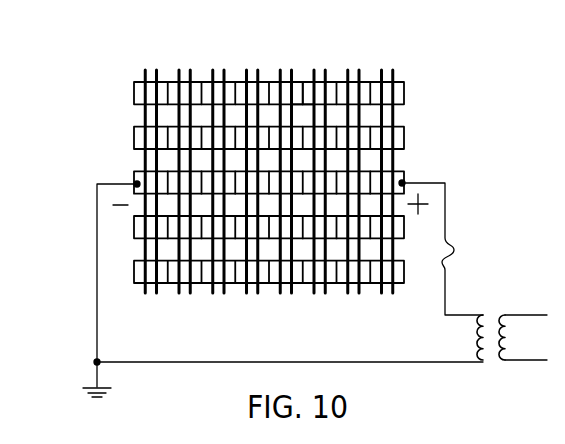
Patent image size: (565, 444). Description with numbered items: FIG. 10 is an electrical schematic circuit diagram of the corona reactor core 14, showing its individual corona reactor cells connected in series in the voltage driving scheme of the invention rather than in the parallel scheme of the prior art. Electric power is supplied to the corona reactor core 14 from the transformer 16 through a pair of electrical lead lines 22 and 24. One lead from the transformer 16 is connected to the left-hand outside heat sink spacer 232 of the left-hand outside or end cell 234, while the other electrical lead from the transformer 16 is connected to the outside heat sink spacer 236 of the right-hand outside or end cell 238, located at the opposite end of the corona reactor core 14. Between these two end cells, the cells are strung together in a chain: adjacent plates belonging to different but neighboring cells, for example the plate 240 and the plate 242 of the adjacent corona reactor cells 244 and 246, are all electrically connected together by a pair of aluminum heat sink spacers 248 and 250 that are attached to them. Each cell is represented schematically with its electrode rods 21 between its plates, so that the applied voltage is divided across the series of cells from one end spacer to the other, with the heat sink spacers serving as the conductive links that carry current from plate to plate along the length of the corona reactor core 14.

The corona reactor core 14 is at (257, 186).
The electrode rods 21 is at (405, 163).
The right-hand outside or end cell 238 is at (388, 119).
The outside heat sink spacer 236 is at (396, 161).
The left-hand outside heat sink spacer 232 is at (143, 286).
The left-hand outside or end cell 234 is at (160, 297).
The plate 240 is at (292, 278).
The corona reactor cell 244 is at (302, 297).
The corona reactor cell 246 is at (310, 297).
The plate 242 is at (318, 277).
The aluminum heat sink spacer 248 is at (302, 85).
The aluminum heat sink spacer 250 is at (306, 82).
The electrical lead line 22 is at (464, 315).
The transformer 16 is at (495, 318).
The electrical lead line 24 is at (459, 361).